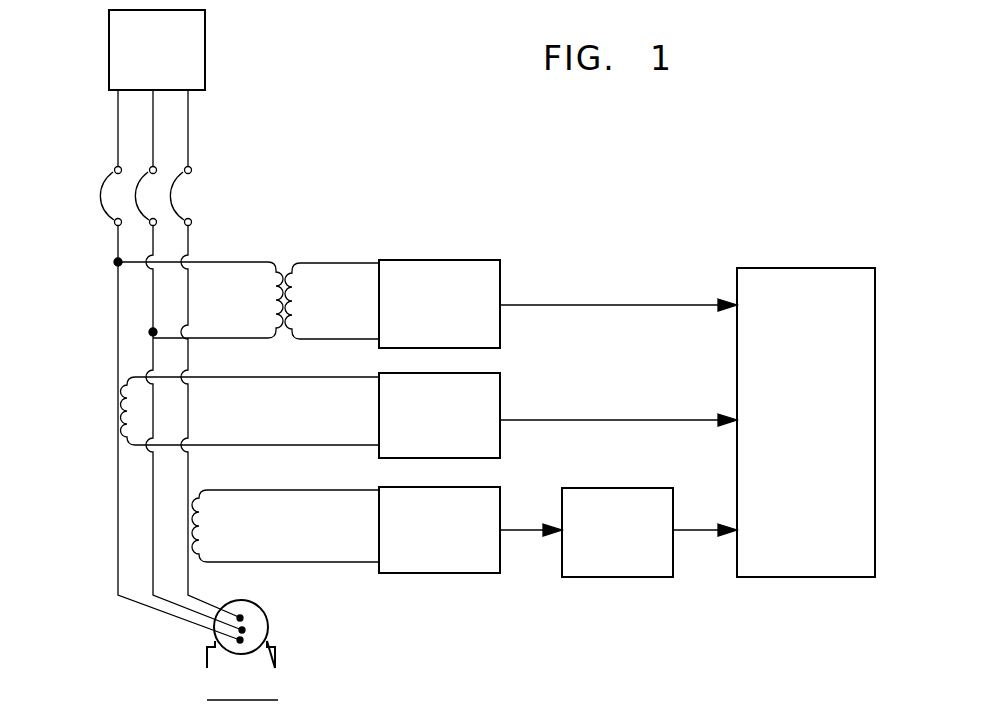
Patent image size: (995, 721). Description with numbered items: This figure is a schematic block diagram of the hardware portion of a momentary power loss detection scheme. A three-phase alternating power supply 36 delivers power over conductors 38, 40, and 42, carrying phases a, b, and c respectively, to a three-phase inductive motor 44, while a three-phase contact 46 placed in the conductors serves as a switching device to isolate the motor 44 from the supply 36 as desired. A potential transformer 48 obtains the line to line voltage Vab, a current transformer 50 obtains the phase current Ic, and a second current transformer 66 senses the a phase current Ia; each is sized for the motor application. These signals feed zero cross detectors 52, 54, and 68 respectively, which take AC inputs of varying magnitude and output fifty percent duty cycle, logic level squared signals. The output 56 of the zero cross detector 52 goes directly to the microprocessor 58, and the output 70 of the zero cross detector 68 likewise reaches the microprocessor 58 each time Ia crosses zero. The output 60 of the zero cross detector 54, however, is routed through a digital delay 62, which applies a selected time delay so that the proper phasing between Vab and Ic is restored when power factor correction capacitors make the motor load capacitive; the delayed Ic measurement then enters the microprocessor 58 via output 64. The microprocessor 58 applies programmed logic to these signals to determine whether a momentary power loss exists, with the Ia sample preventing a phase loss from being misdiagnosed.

The three-phase alternating power supply 36 is at (109, 43).
The conductor 38 is at (118, 126).
The conductor 40 is at (153, 147).
The conductor 42 is at (188, 128).
The three-phase contact 46 is at (168, 200).
The potential transformer 48 is at (288, 262).
The current transformer 50 is at (196, 490).
The zero cross detector 52 is at (465, 260).
The zero cross detector 54 is at (485, 487).
The output 56 is at (649, 306).
The microprocessor 58 is at (834, 268).
The output 60 is at (520, 532).
The digital delay 62 is at (632, 488).
The output 64 is at (694, 530).
The current transformer 66 is at (122, 417).
The zero cross detector 68 is at (500, 398).
The output 70 is at (676, 420).
The three-phase inductive motor 44 is at (268, 630).